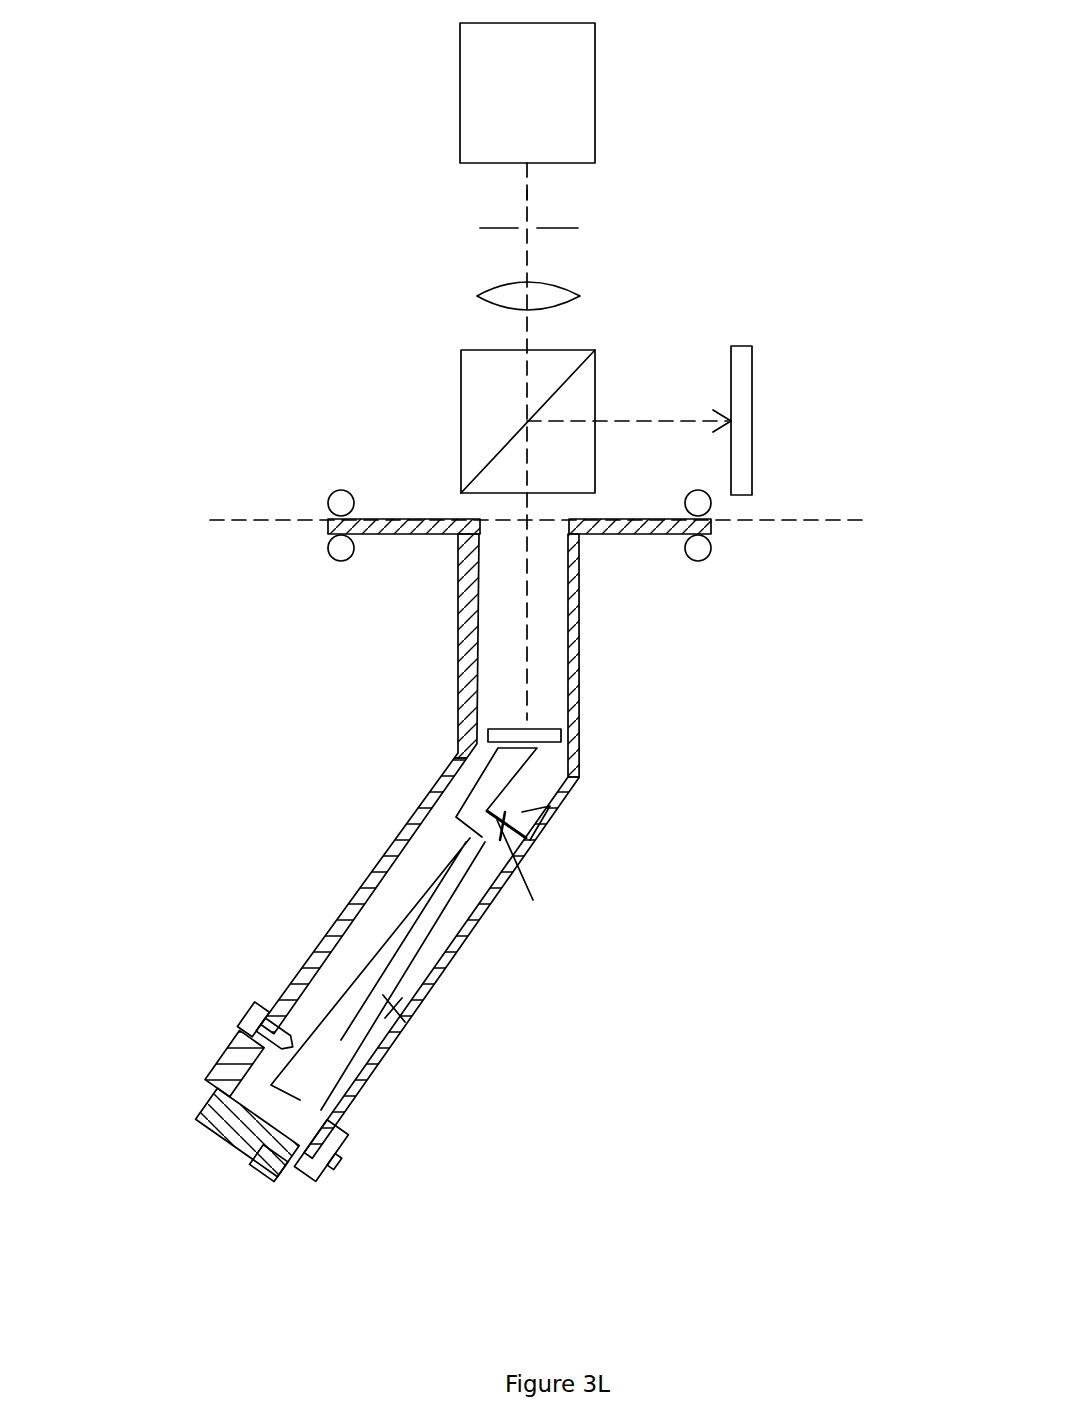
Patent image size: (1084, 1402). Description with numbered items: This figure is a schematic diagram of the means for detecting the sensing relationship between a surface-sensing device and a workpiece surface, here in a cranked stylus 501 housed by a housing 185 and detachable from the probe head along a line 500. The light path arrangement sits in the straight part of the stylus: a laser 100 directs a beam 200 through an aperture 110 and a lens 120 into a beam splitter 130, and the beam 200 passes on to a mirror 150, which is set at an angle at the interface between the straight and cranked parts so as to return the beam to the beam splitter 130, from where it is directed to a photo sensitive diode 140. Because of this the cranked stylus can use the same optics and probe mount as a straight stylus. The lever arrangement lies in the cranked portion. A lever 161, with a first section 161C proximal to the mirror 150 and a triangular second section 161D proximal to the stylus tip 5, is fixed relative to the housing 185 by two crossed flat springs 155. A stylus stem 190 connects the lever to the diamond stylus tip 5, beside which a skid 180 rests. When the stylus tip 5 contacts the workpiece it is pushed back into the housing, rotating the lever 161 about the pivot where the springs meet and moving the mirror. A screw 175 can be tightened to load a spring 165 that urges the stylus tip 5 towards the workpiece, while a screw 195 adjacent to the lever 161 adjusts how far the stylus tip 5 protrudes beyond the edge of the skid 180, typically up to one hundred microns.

The laser 100 is at (487, 73).
The aperture 110 is at (468, 222).
The lens 120 is at (465, 283).
The beam splitter 130 is at (461, 402).
The photo sensitive diode 140 is at (752, 430).
The mirror 150 is at (543, 735).
The crossed flat springs 155 is at (487, 817).
The lever 161 is at (755, 997).
The first section 161C is at (533, 900).
The second section 161D is at (385, 995).
The spring 165 is at (397, 932).
The screw 175 is at (243, 1033).
The skid 180 is at (337, 1130).
The housing 185 is at (308, 953).
The stylus stem 190 is at (218, 1123).
The screw 195 is at (280, 1172).
The beam 200 is at (535, 195).
The line 500 is at (235, 518).
The stylus 501 is at (644, 792).
The stylus tip 5 is at (332, 1153).